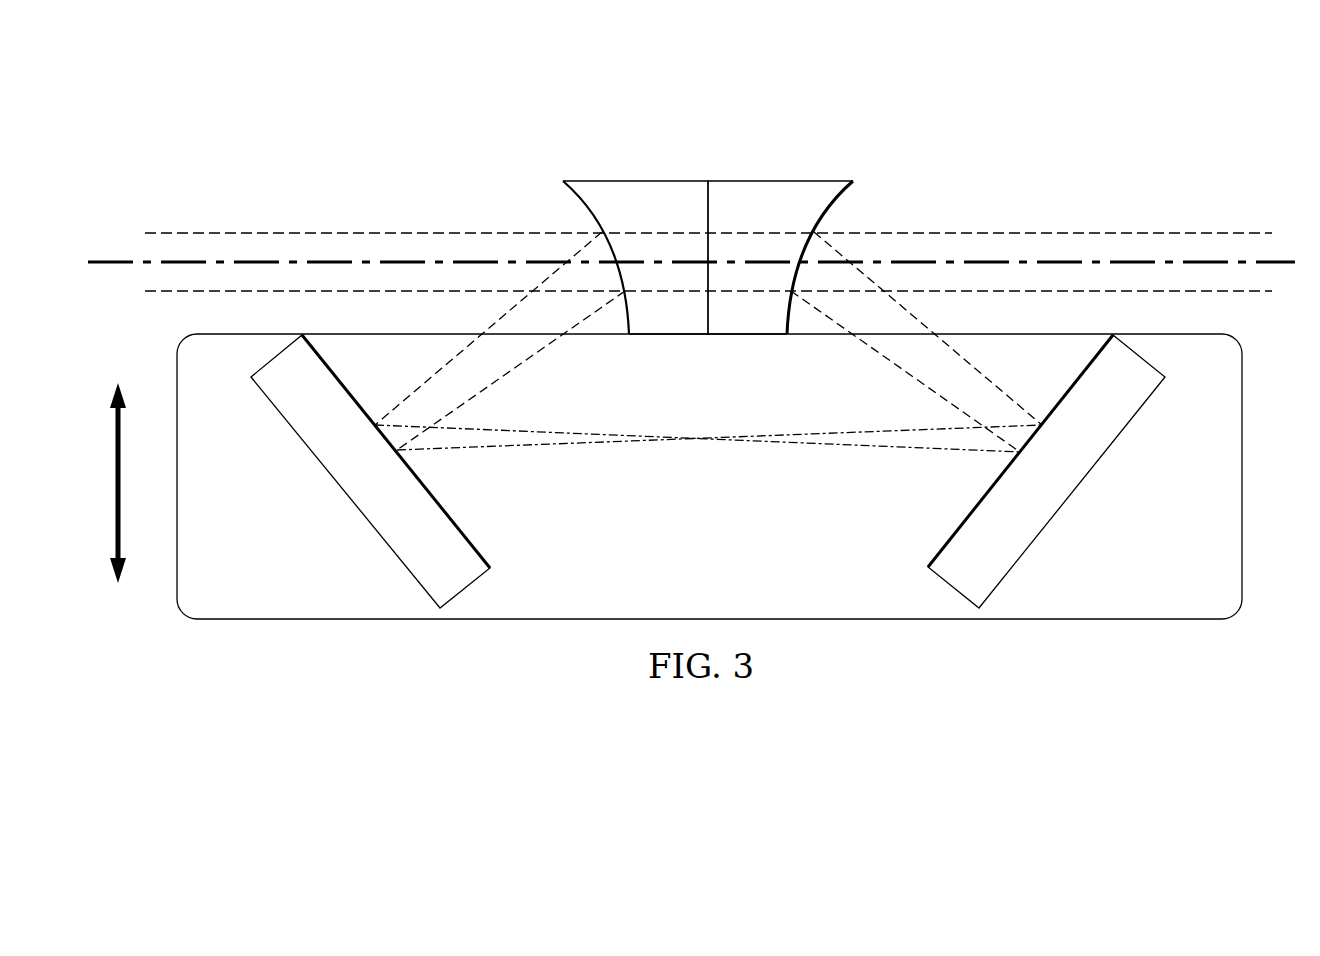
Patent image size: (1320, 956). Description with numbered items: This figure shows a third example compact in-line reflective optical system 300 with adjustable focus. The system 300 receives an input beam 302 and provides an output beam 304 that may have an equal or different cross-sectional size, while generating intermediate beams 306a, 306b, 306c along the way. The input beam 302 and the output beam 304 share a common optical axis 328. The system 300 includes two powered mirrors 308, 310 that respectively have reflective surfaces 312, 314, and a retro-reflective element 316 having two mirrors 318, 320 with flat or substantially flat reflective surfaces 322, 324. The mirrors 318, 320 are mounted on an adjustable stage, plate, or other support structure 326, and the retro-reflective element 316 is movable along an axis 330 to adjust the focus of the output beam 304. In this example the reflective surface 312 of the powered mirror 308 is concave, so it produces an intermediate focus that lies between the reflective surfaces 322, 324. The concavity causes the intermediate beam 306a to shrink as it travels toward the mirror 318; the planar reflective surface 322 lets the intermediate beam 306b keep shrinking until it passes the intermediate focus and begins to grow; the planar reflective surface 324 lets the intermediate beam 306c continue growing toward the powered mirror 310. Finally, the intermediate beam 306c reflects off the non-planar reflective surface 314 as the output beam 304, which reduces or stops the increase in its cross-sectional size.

The compact in-line reflective optical system 300 is at (355, 100).
The input beam 302 is at (373, 232).
The output beam 304 is at (1047, 232).
The intermediate beam 306a is at (527, 360).
The intermediate beam 306b is at (707, 442).
The intermediate beam 306c is at (893, 360).
The powered mirror 308 is at (597, 229).
The powered mirror 310 is at (819, 229).
The reflective surface 312 is at (587, 208).
The reflective surface 314 is at (833, 210).
The retro-reflective element 316 is at (945, 643).
The mirror 318 is at (370, 471).
The mirror 320 is at (1046, 471).
The reflective surface 322 is at (340, 383).
The reflective surface 324 is at (1077, 383).
The support structure 326 is at (1048, 620).
The optical axis 328 is at (103, 260).
The axis 330 is at (113, 483).